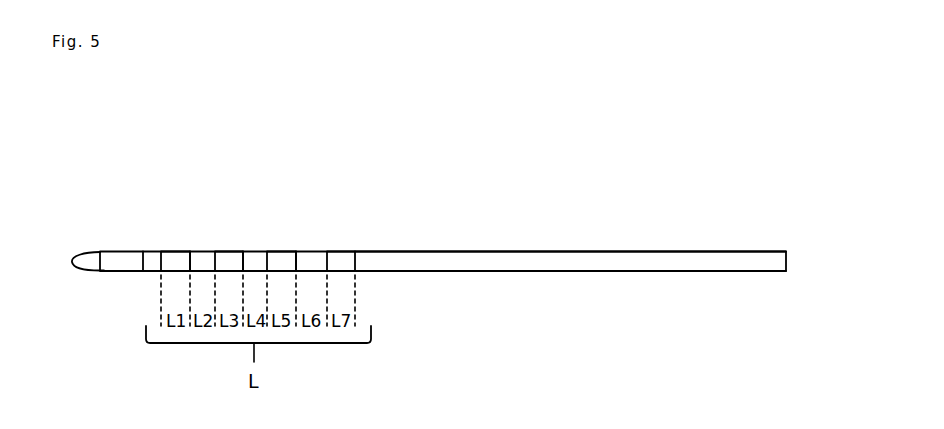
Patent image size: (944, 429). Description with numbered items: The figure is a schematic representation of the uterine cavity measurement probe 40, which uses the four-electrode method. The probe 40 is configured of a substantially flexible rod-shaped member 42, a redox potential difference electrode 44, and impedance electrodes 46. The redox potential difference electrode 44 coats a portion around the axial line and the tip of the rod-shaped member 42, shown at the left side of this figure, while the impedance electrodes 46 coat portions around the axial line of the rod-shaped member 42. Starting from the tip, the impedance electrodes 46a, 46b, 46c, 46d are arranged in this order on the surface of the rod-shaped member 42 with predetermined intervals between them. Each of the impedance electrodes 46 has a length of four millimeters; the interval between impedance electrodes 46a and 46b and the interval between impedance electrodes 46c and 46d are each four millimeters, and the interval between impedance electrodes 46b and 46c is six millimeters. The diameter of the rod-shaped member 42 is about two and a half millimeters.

The uterine cavity measurement probe 40 is at (476, 301).
The rod-shaped member 42 is at (588, 260).
The redox potential difference electrode 44 is at (107, 260).
The impedance electrodes 46 is at (327, 165).
The impedance electrode 46a is at (172, 258).
The impedance electrode 46b is at (225, 258).
The impedance electrode 46c is at (273, 258).
The impedance electrode 46d is at (333, 258).